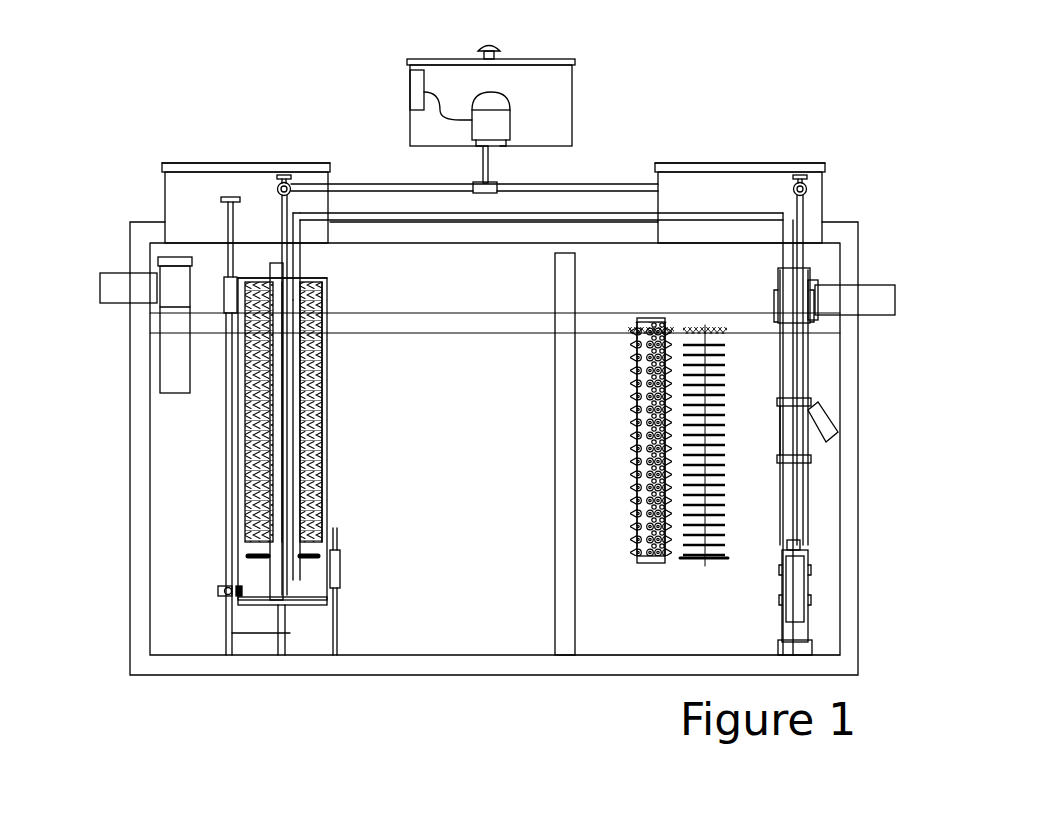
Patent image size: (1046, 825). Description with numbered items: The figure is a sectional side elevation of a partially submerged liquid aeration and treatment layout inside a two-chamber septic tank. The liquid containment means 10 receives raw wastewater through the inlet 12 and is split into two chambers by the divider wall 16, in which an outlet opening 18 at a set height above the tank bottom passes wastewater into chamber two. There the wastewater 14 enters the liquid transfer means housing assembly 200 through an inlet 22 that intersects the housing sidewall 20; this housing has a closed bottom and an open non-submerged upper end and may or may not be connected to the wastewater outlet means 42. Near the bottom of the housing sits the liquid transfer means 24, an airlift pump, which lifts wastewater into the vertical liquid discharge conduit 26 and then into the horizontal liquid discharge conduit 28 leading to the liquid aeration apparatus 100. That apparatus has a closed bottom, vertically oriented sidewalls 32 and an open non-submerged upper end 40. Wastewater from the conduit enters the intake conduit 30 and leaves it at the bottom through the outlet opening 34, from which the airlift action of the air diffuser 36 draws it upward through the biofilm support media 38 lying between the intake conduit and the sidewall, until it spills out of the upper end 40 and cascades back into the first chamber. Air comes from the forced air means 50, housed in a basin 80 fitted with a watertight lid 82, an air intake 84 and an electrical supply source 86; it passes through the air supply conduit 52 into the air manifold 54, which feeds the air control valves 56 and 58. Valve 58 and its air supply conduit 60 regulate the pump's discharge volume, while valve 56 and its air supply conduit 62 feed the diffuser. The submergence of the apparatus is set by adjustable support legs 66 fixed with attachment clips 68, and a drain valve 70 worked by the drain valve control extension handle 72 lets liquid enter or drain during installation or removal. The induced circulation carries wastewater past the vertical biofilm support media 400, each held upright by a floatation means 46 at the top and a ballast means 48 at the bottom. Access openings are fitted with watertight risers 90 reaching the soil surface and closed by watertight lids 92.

The liquid containment means 10 is at (110, 475).
The inlet 12 is at (120, 285).
The wastewater 14 is at (448, 310).
The divider wall 16 is at (545, 600).
The outlet opening 18 is at (558, 462).
The housing sidewall 20 is at (780, 498).
The inlet 22 is at (830, 432).
The liquid transfer means 24 is at (795, 580).
The vertical liquid discharge conduit 26 is at (783, 293).
The horizontal liquid discharge conduit 28 is at (565, 215).
The intake conduit 30 is at (290, 345).
The sidewalls 32 is at (318, 512).
The outlet opening 34 is at (275, 582).
The air diffuser 36 is at (252, 555).
The biofilm support media 38 is at (318, 392).
The open non-submerged upper end 40 is at (310, 283).
The wastewater outlet means 42 is at (870, 287).
The floatation means 46 is at (718, 330).
The ballast means 48 is at (702, 562).
The forced air means 50 is at (505, 125).
The air supply conduit 52 is at (490, 165).
The air manifold 54 is at (420, 185).
The air control valve 56 is at (287, 172).
The air control valve 58 is at (803, 172).
The air supply conduit 60 is at (795, 258).
The air supply conduit 62 is at (290, 430).
The adjustable support legs 66 is at (330, 613).
The attachment clips 68 is at (340, 576).
The drain valve 70 is at (220, 598).
The drain valve control extension handle 72 is at (225, 222).
The housing or basin 80 is at (572, 100).
The watertight lid 82 is at (540, 59).
The air intake 84 is at (494, 45).
The electrical supply source 86 is at (424, 75).
The watertight risers 90 is at (165, 195).
The watertight lids 92 is at (196, 162).
The liquid aeration apparatus 100 is at (215, 470).
The liquid transfer means housing assembly 200 is at (775, 430).
The biofilm support media 400 is at (630, 455).